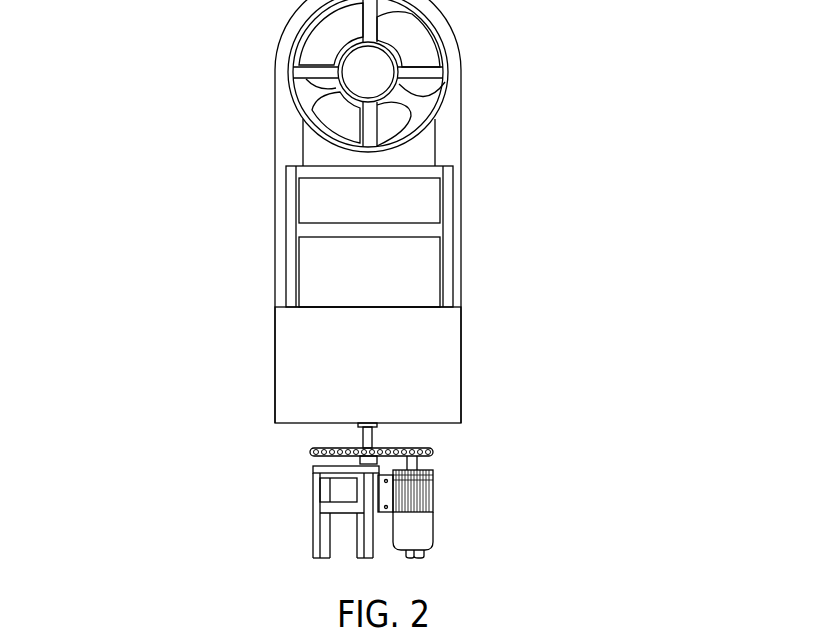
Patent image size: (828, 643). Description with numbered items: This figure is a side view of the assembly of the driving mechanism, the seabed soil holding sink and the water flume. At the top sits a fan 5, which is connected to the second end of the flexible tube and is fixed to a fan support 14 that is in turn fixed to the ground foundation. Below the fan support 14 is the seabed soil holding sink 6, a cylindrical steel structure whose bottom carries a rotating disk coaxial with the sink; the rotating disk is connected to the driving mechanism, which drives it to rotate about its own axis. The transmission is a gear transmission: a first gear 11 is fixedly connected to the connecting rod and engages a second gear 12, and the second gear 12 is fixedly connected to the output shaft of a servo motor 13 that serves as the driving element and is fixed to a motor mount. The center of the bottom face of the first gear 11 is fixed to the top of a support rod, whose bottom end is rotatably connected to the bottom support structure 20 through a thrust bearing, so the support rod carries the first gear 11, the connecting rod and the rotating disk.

The fan 5 is at (368, 73).
The fan support 14 is at (368, 230).
The seabed soil holding sink 6 is at (368, 377).
The first gear 11 is at (209, 434).
The second gear 12 is at (435, 453).
The bottom support structure 20 is at (316, 536).
The servo motor 13 is at (417, 537).